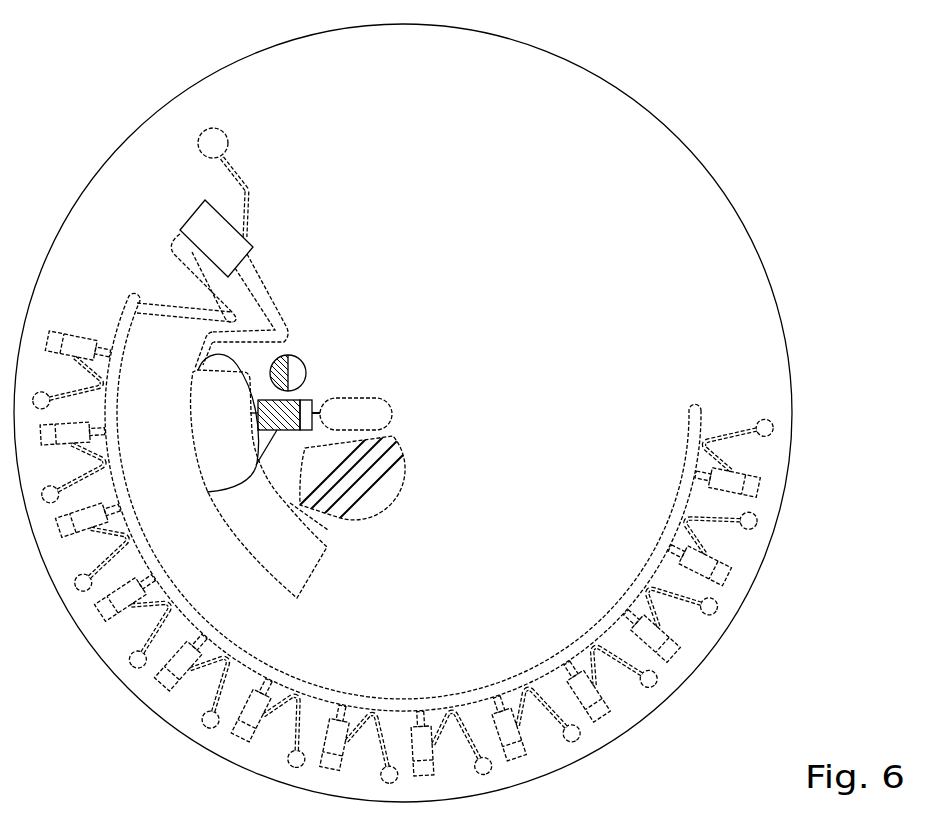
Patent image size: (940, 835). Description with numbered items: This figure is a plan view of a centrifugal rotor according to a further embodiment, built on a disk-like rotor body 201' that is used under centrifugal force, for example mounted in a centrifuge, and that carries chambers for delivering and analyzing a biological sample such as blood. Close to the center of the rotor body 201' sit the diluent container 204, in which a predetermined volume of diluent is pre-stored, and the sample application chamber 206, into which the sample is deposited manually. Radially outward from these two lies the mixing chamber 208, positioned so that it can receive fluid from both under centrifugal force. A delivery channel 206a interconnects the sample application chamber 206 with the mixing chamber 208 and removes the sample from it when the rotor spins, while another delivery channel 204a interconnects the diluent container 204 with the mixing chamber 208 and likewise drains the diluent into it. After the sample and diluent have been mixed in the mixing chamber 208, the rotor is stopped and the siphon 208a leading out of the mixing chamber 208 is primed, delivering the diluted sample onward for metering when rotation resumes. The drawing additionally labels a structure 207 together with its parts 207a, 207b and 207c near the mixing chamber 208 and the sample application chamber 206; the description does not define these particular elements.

The housing 201' is at (453, 413).
The diluent container 204 is at (370, 498).
The delivery channel 204a is at (297, 510).
The sample application chamber 206 is at (376, 413).
The delivery channel 206a is at (318, 399).
The lever 207 is at (207, 492).
The lever pivot 207a is at (305, 366).
The lever arm 207b is at (199, 346).
The lever body 207c is at (300, 396).
The mixing chamber 208 is at (237, 520).
The siphon 208a is at (262, 301).